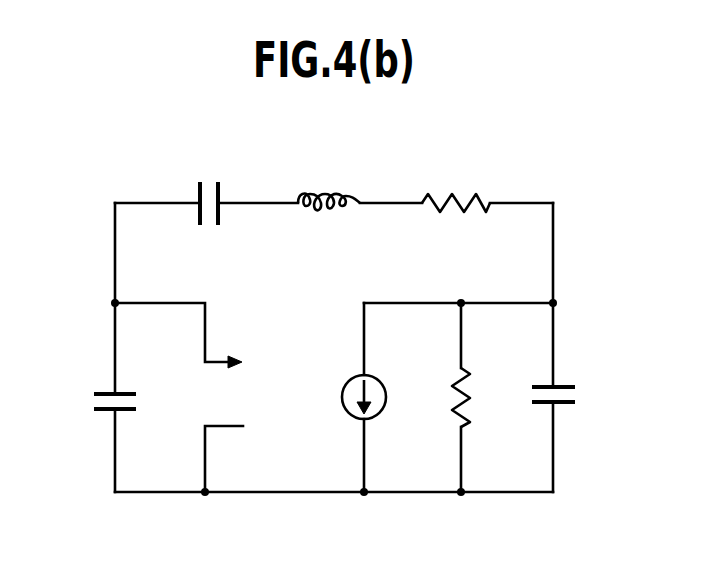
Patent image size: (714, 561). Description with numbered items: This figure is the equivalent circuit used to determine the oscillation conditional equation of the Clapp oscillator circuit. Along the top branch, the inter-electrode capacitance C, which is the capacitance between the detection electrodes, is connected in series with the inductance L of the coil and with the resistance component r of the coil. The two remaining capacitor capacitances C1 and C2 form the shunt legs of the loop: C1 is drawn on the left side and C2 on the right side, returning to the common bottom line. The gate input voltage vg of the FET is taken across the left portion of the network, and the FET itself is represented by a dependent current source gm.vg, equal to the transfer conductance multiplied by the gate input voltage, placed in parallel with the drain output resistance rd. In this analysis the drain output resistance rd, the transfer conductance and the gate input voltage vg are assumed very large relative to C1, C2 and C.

The capacitor capacitance C is at (209, 183).
The inductance L is at (329, 183).
The resistance component of the coil r is at (456, 184).
The capacitor capacitance C1 is at (91, 404).
The capacitor capacitance C2 is at (577, 400).
The gate input voltage vg is at (196, 397).
The transfer conductance current source gm.vg is at (401, 399).
The drain output resistance rd is at (504, 397).